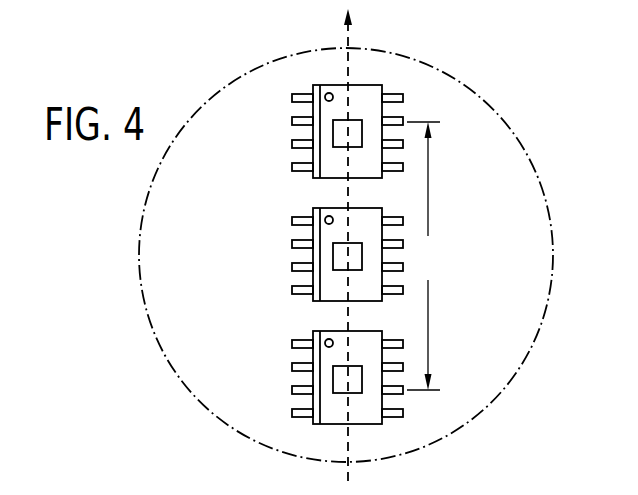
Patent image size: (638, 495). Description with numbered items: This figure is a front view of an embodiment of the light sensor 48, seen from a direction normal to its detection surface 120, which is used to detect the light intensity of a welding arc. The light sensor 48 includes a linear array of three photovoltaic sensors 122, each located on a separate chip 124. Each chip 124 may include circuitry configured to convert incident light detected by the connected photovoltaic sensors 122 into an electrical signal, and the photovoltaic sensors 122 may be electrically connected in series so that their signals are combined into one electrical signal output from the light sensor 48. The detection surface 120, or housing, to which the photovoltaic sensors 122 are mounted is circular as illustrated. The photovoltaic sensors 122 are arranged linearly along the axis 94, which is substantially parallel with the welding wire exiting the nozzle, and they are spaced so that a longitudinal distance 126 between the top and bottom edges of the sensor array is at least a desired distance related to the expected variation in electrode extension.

The light sensor 48 is at (474, 60).
The axis 94 is at (347, 33).
The detection surface 120 is at (477, 115).
The photovoltaic sensor 122 is at (303, 299).
The chip 124 is at (315, 254).
The longitudinal distance 126 is at (427, 256).